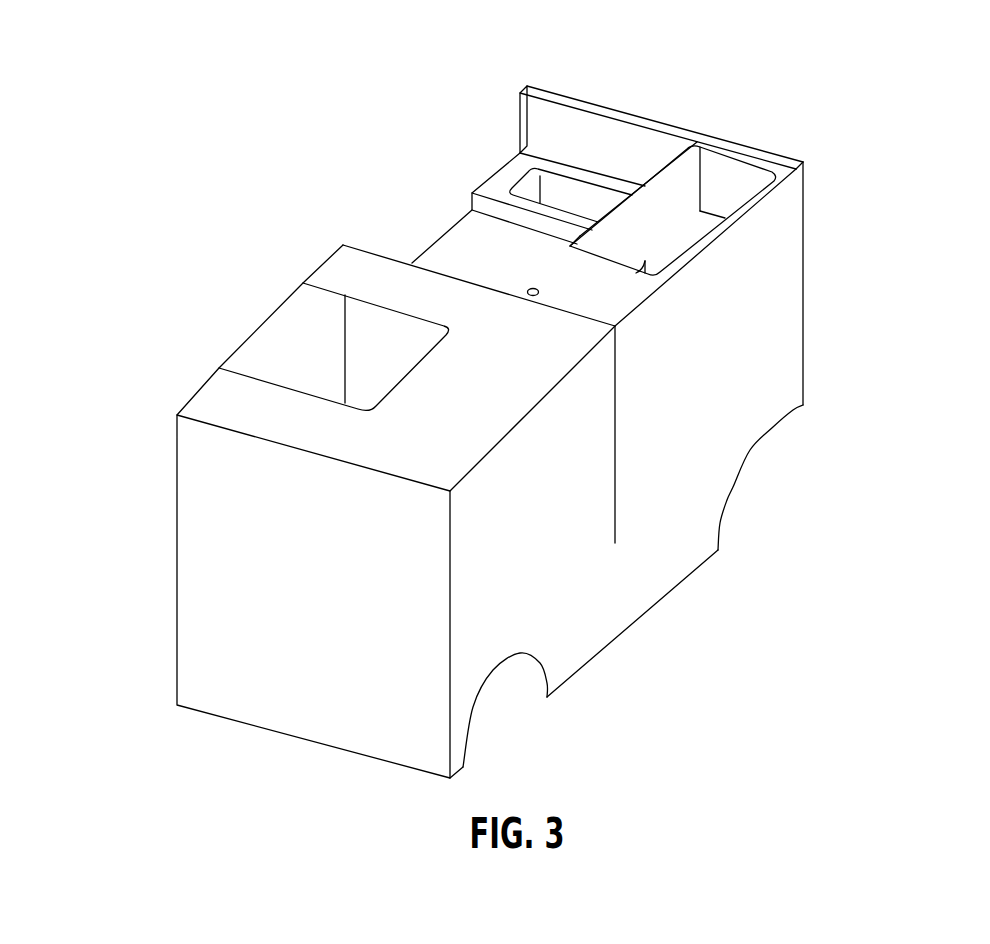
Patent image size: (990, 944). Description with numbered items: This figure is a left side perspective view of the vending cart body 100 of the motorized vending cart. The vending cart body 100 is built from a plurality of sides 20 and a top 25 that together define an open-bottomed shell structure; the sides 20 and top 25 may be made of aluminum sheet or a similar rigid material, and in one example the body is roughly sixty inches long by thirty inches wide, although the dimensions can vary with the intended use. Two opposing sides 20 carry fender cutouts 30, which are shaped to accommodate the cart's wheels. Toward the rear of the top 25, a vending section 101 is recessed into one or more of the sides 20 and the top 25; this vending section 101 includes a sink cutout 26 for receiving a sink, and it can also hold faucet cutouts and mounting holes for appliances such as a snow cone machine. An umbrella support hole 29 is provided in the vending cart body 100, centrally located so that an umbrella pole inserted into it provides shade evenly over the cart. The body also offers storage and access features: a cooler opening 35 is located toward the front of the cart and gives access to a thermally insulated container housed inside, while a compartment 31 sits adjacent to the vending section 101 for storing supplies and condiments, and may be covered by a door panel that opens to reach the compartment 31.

The vending cart body 100 is at (818, 210).
The sides 20 is at (197, 577).
The top 25 is at (372, 272).
The sink cutout 26 is at (507, 180).
The umbrella support hole 29 is at (534, 286).
The fender cutouts 30 is at (540, 677).
The compartment 31 is at (728, 153).
The cooler opening 35 is at (290, 340).
The vending section 101 is at (520, 125).